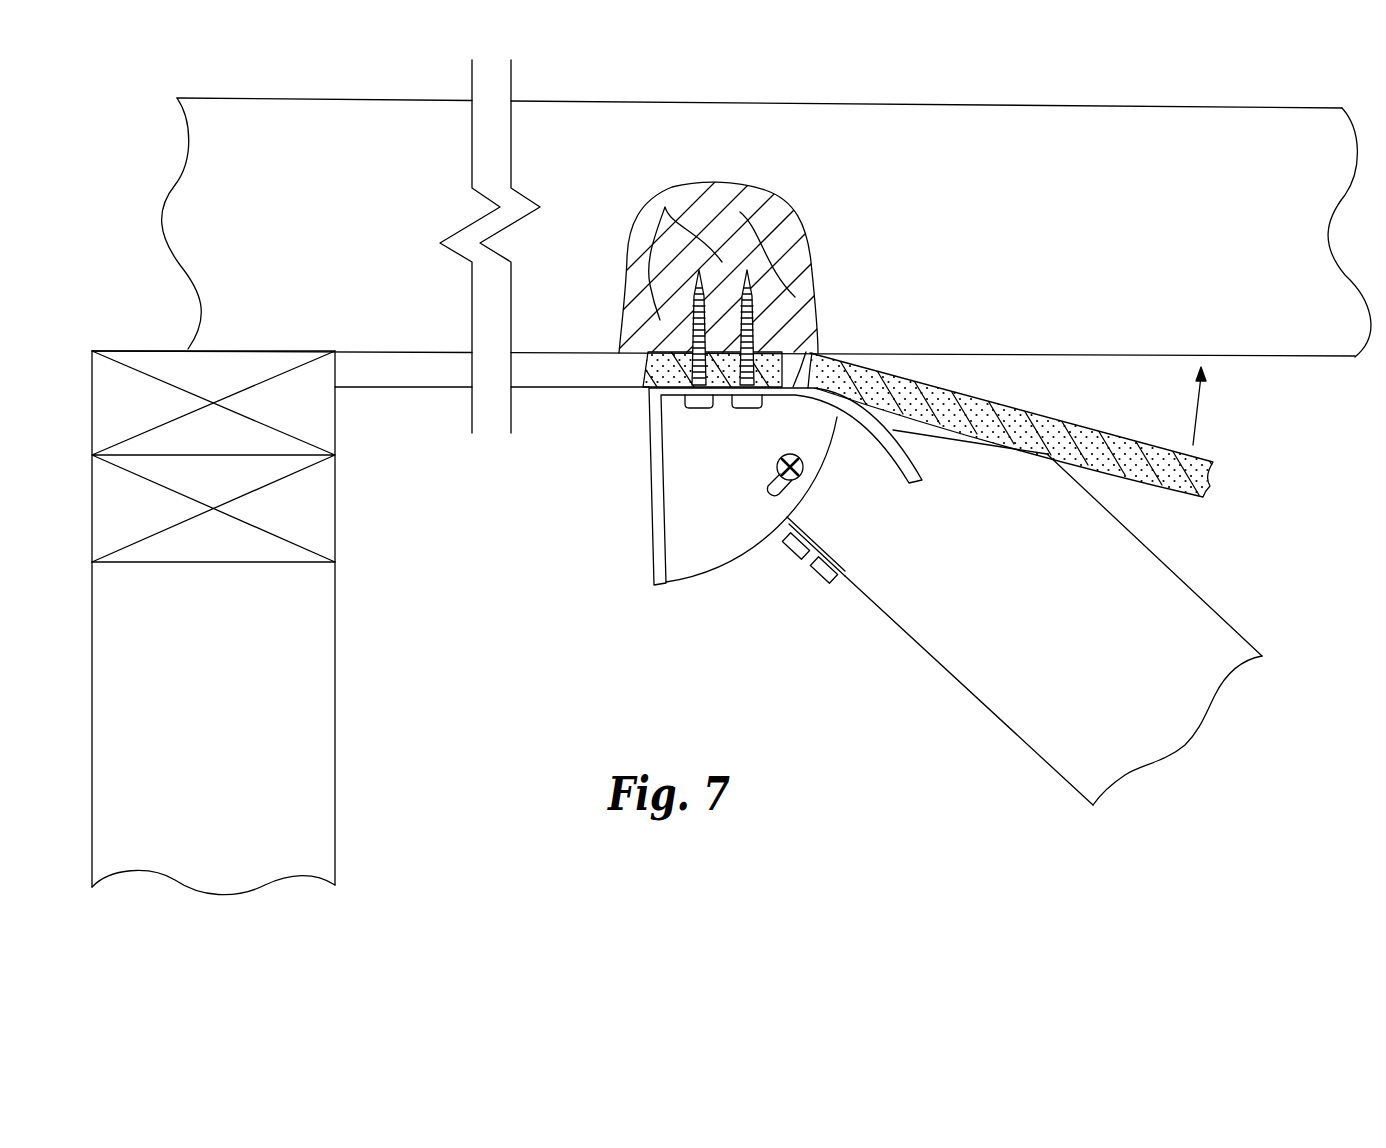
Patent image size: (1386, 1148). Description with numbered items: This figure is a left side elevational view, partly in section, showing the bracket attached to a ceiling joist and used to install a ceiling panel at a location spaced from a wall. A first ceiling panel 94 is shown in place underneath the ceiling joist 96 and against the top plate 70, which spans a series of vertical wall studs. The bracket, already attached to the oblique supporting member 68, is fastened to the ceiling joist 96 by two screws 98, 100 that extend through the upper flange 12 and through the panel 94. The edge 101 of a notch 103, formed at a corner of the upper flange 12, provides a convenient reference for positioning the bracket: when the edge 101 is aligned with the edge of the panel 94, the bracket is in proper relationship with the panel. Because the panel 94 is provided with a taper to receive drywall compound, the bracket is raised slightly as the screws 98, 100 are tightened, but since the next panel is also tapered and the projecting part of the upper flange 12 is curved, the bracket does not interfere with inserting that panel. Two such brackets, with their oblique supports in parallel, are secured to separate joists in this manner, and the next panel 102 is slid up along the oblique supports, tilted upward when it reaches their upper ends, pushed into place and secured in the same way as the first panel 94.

The upper flange 12 is at (725, 410).
The oblique supporting member 68 is at (1018, 704).
The top plate 70 is at (357, 441).
The first ceiling panel 94 is at (547, 372).
The ceiling joist 96 is at (1012, 320).
The screw 98 is at (699, 408).
The screw 100 is at (743, 407).
The edge 101 is at (796, 387).
The next panel 102 is at (1100, 430).
The notch 103 is at (799, 373).